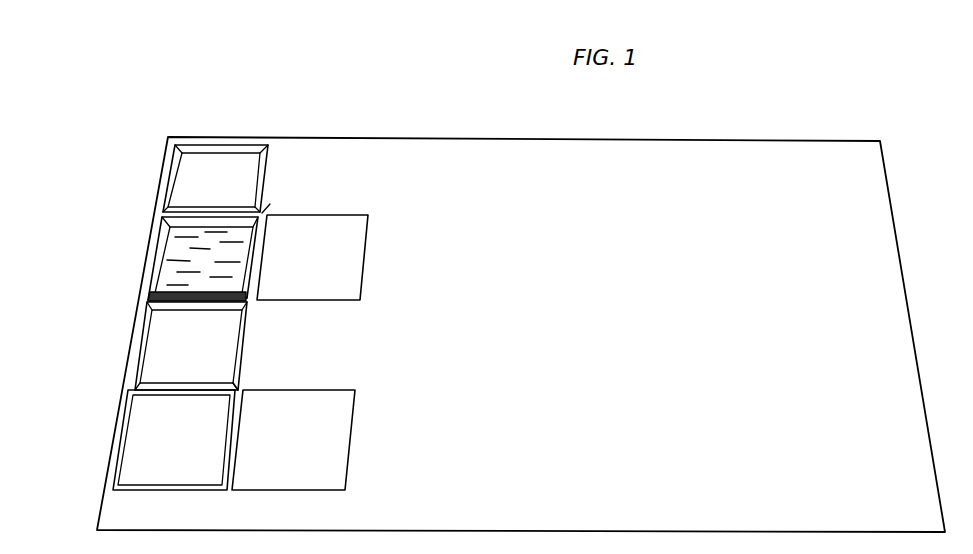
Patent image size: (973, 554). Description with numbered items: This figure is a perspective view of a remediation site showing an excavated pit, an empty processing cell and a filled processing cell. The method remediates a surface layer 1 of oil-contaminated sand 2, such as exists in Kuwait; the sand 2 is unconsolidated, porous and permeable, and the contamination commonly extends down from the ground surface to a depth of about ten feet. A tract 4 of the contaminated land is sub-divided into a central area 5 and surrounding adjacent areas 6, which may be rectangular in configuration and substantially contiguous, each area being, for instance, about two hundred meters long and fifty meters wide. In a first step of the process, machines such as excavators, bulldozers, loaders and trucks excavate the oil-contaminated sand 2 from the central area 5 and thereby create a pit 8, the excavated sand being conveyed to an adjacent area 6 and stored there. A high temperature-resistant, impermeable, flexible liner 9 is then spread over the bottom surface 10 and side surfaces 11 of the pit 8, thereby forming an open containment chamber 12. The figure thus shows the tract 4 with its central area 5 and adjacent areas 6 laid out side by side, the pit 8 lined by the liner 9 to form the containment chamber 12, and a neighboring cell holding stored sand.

The surface layer 1 is at (430, 150).
The oil-contaminated sand 2 is at (506, 198).
The tract 4 is at (472, 271).
The central area 5 is at (272, 204).
The adjacent areas 6 is at (247, 168).
The pit 8 is at (223, 362).
The liner 9 is at (160, 227).
The bottom surface 10 is at (206, 356).
The side surfaces 11 is at (172, 302).
The open containment chamber 12 is at (173, 267).